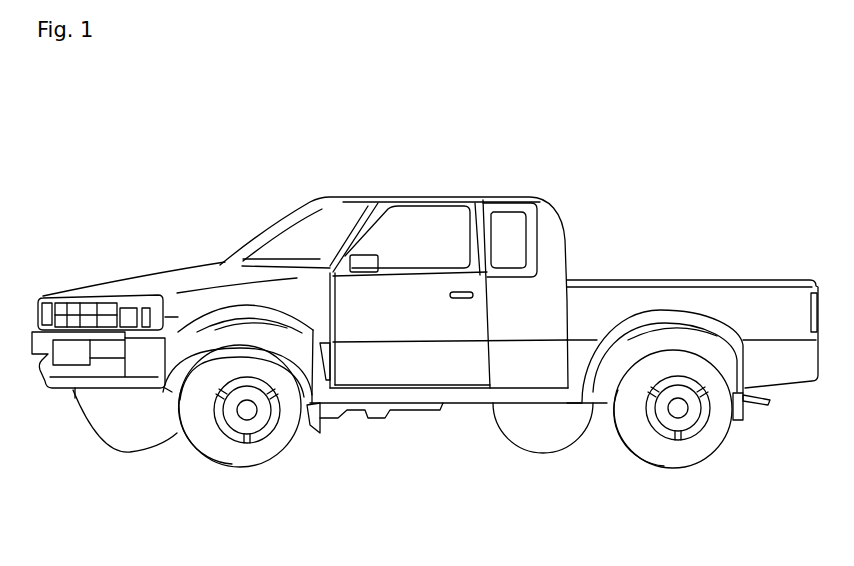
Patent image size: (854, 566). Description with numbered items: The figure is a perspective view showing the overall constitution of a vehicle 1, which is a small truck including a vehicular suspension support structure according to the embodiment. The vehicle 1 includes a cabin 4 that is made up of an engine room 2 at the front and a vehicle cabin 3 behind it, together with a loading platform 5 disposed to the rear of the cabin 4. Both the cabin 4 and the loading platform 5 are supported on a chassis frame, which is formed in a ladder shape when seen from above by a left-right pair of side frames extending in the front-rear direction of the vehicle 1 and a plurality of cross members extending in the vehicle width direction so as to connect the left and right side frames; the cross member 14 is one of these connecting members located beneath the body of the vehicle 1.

The vehicle 1 is at (530, 121).
The engine room 2 is at (152, 254).
The vehicle cabin 3 is at (352, 175).
The cabin 4 is at (570, 213).
The loading platform 5 is at (721, 269).
The cross member 14 is at (250, 455).